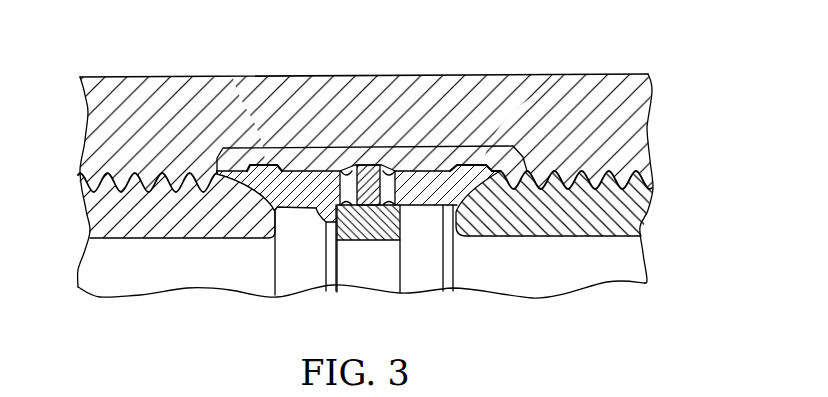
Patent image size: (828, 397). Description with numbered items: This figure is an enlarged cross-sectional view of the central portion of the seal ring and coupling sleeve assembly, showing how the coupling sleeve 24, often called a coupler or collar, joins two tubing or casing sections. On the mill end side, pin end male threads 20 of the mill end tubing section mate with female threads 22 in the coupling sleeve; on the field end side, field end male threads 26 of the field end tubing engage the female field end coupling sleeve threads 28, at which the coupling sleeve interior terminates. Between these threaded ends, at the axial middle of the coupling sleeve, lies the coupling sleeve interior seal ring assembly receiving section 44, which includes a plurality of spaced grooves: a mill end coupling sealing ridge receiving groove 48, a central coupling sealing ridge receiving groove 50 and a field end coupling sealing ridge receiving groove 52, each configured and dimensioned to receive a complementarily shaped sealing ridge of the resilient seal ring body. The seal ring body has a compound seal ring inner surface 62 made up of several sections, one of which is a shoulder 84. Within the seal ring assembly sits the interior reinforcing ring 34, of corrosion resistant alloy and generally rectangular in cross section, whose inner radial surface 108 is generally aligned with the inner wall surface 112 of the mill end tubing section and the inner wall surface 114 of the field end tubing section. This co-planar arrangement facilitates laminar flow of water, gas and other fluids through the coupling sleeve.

The pin end male threads 20 is at (650, 192).
The female threads 22 is at (614, 168).
The coupling sleeve 24 is at (482, 62).
The field end male threads 26 is at (88, 188).
The female field end coupling sleeve threads 28 is at (133, 172).
The interior reinforcing ring 34 is at (389, 247).
The coupling sleeve interior seal ring assembly receiving section 44 is at (366, 162).
The mill end coupling sealing ridge receiving groove 48 is at (483, 163).
The central coupling sealing ridge receiving groove 50 is at (384, 163).
The field end coupling sealing ridge receiving groove 52 is at (265, 165).
The compound seal ring inner surface 62 is at (437, 255).
The shoulder 84 is at (334, 223).
The inner radial surface 108 is at (357, 242).
The inner wall surface 112 is at (587, 238).
The inner wall surface 114 is at (133, 240).